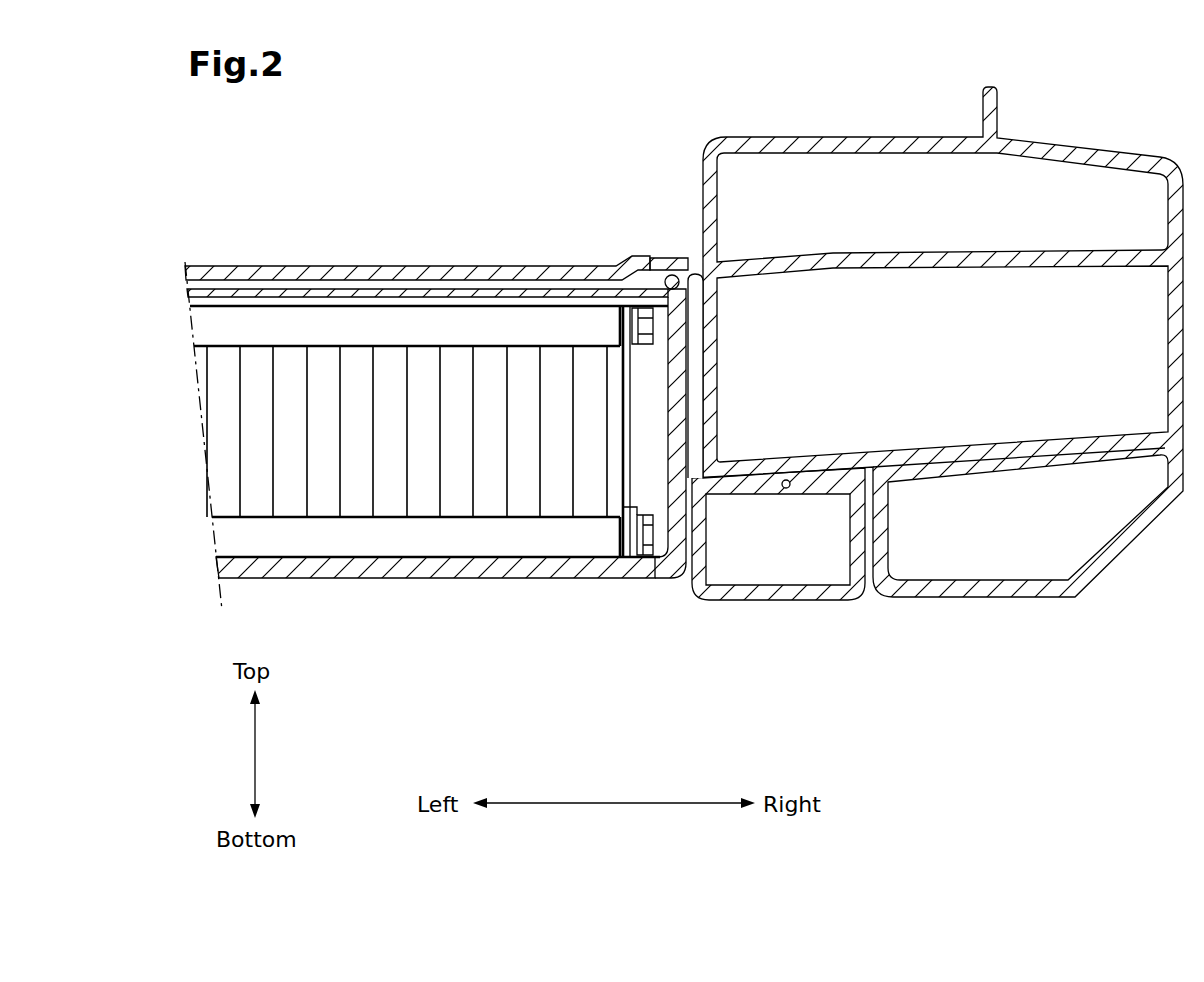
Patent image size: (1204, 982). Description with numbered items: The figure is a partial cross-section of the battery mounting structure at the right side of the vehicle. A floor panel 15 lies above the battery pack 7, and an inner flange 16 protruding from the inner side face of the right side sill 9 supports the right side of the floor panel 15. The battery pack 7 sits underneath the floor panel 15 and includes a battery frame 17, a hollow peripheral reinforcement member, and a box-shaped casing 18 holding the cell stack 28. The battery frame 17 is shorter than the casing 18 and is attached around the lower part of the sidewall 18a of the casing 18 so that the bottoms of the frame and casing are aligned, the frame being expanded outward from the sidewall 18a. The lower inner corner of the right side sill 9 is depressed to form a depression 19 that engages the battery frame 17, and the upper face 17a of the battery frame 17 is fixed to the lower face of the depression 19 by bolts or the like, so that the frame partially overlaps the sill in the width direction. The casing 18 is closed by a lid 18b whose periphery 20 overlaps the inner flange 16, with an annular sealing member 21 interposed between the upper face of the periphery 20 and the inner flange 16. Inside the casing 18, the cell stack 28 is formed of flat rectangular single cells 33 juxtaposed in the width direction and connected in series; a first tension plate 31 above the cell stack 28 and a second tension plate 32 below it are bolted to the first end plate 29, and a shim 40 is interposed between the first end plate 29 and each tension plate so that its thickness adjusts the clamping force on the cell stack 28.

The battery pack 7 is at (417, 244).
The right side sill 9 is at (937, 367).
The floor panel 15 is at (407, 274).
The inner flange 16 is at (656, 262).
The battery frame 17 is at (816, 596).
The upper face of the battery frame 17a is at (822, 476).
The casing 18 is at (492, 418).
The sidewall of the casing 18a is at (697, 356).
The lid 18b is at (253, 292).
The depression 19 is at (781, 484).
The periphery of the lid 20 is at (690, 262).
The annular sealing member 21 is at (669, 262).
The cell stack 28 is at (407, 419).
The first end plate 29 is at (623, 404).
The first tension plate 31 is at (540, 322).
The second tension plate 32 is at (528, 545).
The single cell 33 is at (362, 506).
The shim 40 is at (620, 550).